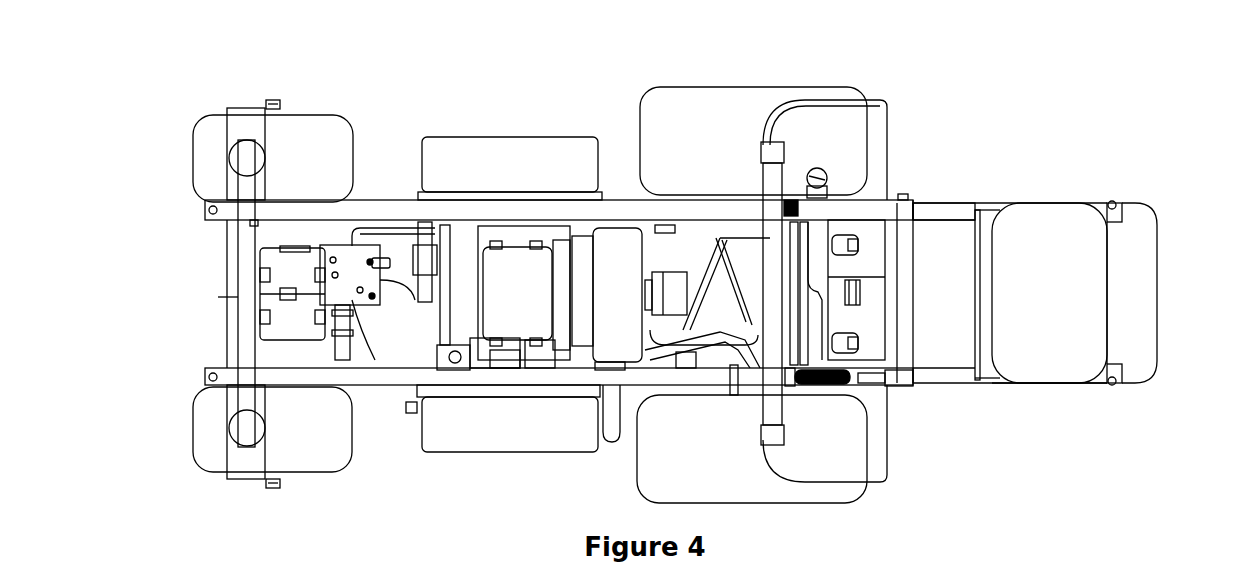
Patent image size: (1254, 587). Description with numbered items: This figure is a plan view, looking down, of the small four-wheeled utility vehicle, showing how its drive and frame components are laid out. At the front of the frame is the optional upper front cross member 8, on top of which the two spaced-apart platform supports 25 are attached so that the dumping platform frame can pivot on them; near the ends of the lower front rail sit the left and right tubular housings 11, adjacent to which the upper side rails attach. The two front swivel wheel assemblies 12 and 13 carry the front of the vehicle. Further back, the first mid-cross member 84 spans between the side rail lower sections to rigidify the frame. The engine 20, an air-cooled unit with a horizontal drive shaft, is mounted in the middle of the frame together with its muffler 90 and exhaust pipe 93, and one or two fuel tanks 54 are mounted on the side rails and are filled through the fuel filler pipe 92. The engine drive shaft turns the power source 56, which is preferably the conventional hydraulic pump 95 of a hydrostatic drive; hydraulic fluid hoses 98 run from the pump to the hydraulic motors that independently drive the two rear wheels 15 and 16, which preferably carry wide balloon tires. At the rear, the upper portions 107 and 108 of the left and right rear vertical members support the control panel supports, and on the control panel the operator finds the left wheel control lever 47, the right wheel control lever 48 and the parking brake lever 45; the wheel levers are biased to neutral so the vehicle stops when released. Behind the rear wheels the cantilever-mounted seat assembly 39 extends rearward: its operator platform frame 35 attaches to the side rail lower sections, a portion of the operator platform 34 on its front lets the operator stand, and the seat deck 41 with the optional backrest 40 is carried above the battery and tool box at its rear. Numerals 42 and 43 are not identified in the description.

The upper front cross member 8 is at (243, 262).
The tubular housing 11 is at (232, 158).
The front swivel wheel assembly 12 is at (310, 475).
The front swivel wheel assembly 13 is at (310, 112).
The rear wheel 15 is at (748, 455).
The rear wheel 16 is at (748, 100).
The engine 20 is at (470, 255).
The platform support 25 is at (247, 142).
The operator platform 34 is at (963, 237).
The operator platform frame 35 is at (932, 215).
The seat assembly 39 is at (1062, 388).
The backrest 40 is at (1125, 296).
The seat deck 41 is at (983, 355).
The wheel cover 42 is at (870, 470).
The wheel cover 43 is at (875, 116).
The parking brake lever 45 is at (883, 392).
The left wheel control lever 47 is at (858, 345).
The right wheel control lever 48 is at (858, 245).
The fuel tank 54 is at (504, 294).
The power source 56 is at (681, 268).
The first mid-cross member 84 is at (437, 338).
The muffler 90 is at (607, 295).
The fuel filler pipe 92 is at (824, 182).
The exhaust pipe 93 is at (612, 408).
The hydraulic pump 95 is at (660, 357).
The hydraulic fluid hose 98 is at (695, 355).
The upper portion of left rear vertical member 107 is at (790, 392).
The upper portion of right rear vertical member 108 is at (793, 205).